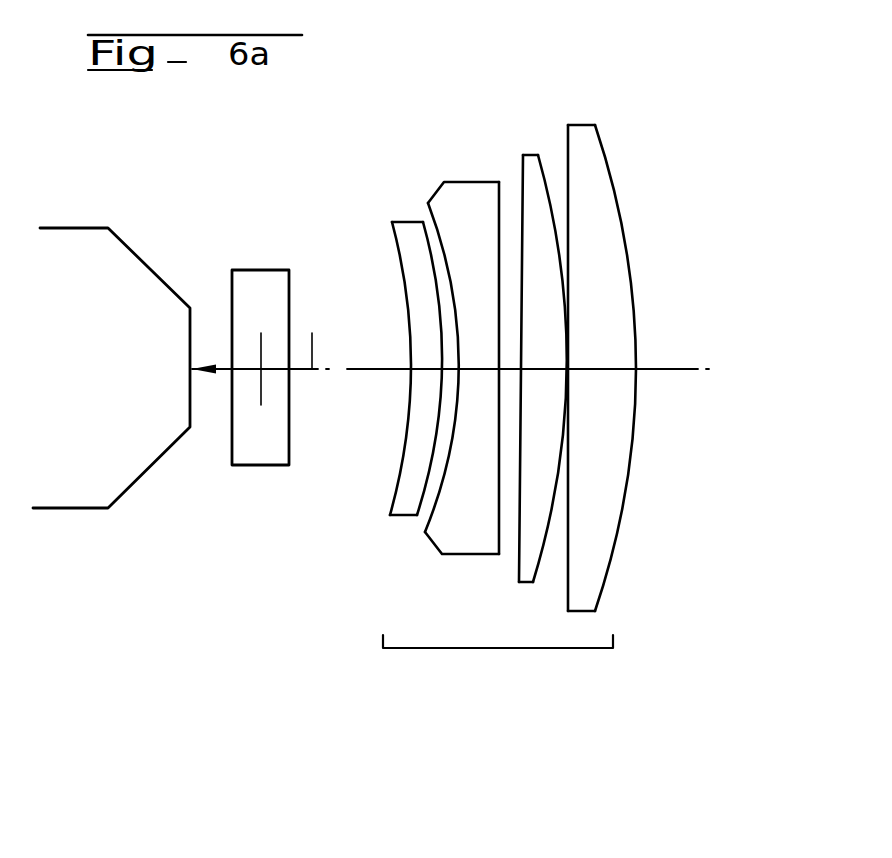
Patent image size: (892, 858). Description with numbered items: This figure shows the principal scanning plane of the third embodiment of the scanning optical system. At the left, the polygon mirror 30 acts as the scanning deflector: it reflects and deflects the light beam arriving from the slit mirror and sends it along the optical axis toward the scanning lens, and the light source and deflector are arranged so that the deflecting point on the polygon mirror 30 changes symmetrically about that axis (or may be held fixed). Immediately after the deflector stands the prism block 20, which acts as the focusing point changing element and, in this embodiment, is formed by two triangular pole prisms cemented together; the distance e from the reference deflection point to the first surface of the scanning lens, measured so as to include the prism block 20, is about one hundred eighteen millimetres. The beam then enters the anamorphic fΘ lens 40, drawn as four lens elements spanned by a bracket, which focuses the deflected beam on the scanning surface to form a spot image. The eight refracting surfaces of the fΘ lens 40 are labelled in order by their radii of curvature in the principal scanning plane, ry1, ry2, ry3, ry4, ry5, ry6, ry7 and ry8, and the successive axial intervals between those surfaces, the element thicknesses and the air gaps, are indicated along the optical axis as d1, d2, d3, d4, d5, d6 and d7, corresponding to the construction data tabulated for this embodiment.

The prism block 20 is at (264, 445).
The polygon mirror 30 is at (93, 491).
The anamorphic fΘ lens 40 is at (488, 648).
The distance from the reference deflection point to the surface of the fΘ lens e is at (313, 337).
The radius of curvature in the principal scanning plane ry1 is at (396, 243).
The radius of curvature in the principal scanning plane ry2 is at (425, 228).
The radius of curvature in the principal scanning plane ry3 is at (434, 212).
The radius of curvature in the principal scanning plane ry4 is at (499, 185).
The radius of curvature in the principal scanning plane ry5 is at (522, 175).
The radius of curvature in the principal scanning plane ry6 is at (540, 155).
The radius of curvature in the principal scanning plane ry7 is at (568, 125).
The radius of curvature in the principal scanning plane ry8 is at (605, 147).
The axial thickness of first lens d1 is at (415, 372).
The axial spacing between first and second lens d2 is at (453, 372).
The axial thickness of second lens d3 is at (470, 372).
The axial spacing between second and third lens d4 is at (512, 372).
The axial thickness of third lens d5 is at (536, 372).
The axial spacing between third and fourth lens d6 is at (568, 372).
The axial thickness of fourth lens d7 is at (612, 370).